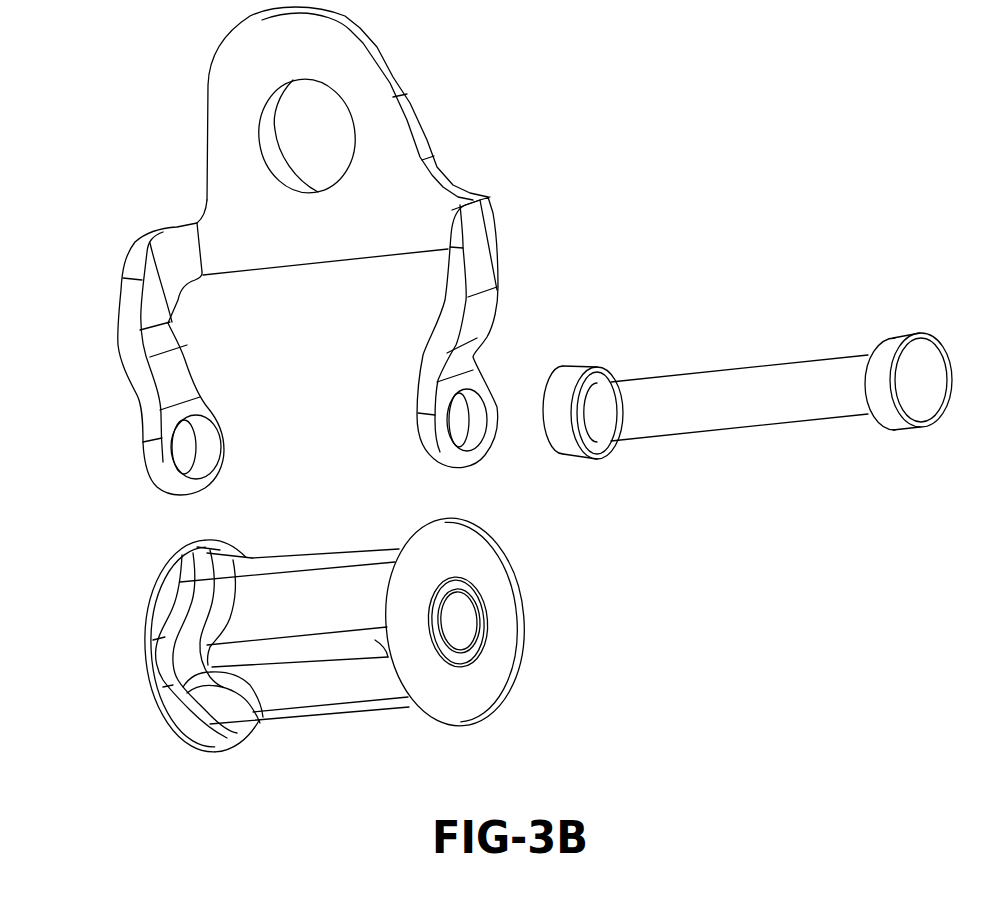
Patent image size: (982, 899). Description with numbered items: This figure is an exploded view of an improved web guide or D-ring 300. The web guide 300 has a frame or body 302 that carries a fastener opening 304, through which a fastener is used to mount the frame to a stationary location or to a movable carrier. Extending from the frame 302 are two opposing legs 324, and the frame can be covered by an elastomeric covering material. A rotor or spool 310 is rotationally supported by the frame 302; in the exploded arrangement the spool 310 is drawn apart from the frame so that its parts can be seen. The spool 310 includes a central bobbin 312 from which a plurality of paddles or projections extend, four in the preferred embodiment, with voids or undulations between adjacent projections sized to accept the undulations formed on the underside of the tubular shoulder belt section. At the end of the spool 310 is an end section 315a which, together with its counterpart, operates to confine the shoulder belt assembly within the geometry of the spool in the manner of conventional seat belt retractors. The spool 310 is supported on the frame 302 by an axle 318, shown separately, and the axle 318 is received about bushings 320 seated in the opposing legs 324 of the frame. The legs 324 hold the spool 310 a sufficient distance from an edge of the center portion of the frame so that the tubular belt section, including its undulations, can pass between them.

The web guide or D-ring 300 is at (208, 80).
The frame or body 302 is at (387, 137).
The fastener opening 304 is at (333, 97).
The legs 324 is at (482, 313).
The bushings 320 is at (188, 458).
The axle 318 is at (737, 362).
The rotor or spool 310 is at (336, 705).
The central bobbin 312 is at (312, 590).
The end section 315a is at (150, 613).